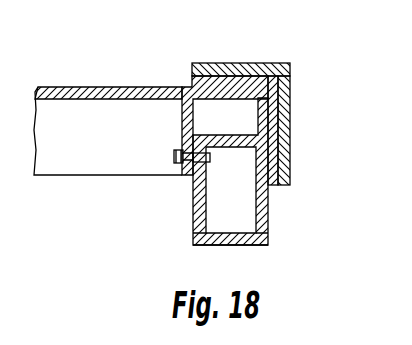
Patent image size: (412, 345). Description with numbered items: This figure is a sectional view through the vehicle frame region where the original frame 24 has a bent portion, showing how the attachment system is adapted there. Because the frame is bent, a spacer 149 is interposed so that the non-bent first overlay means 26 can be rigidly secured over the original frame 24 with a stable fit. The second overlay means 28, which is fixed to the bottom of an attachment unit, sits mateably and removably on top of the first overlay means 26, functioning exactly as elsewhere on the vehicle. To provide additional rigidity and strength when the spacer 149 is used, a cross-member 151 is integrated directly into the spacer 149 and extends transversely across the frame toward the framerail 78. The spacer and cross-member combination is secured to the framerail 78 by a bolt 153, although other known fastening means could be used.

The original frame 24 is at (269, 222).
The first overlay means 26 is at (291, 75).
The second overlay means 28 is at (279, 63).
The framerail 78 is at (268, 239).
The spacer 149 is at (232, 105).
The cross-member 151 is at (62, 164).
The bolt 153 is at (175, 154).